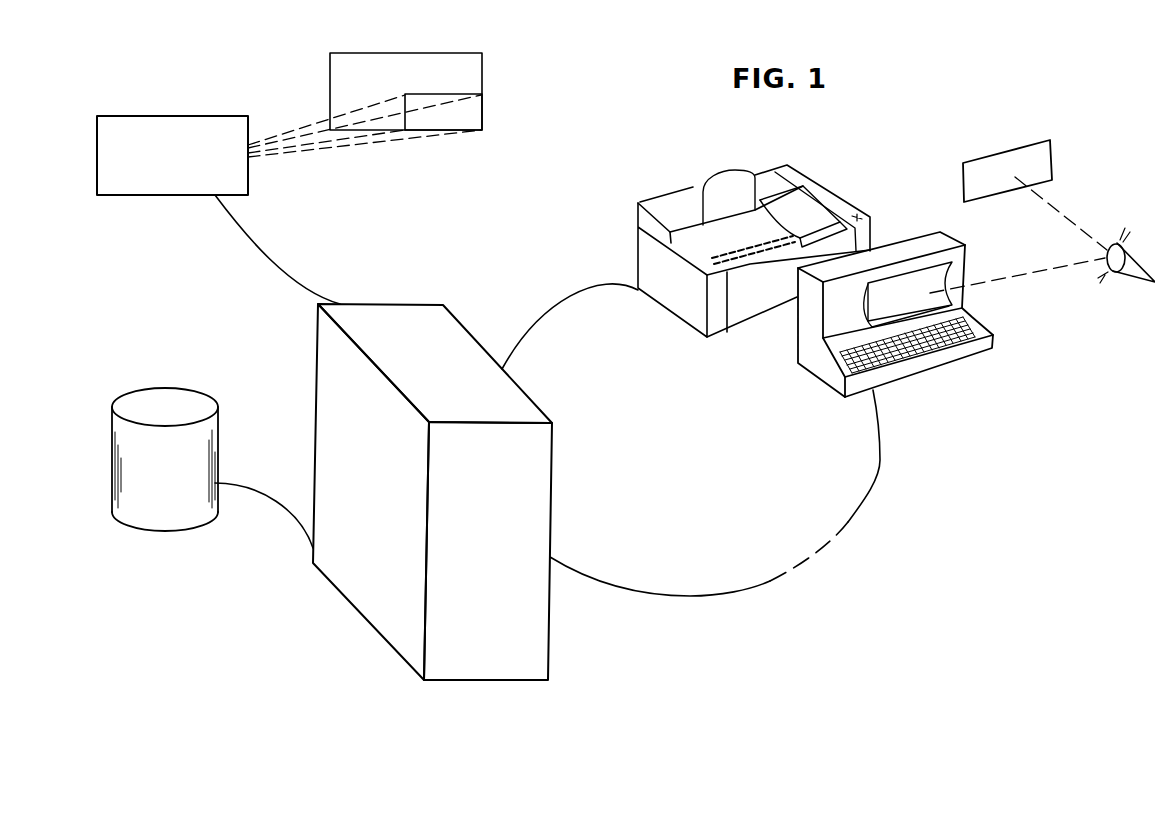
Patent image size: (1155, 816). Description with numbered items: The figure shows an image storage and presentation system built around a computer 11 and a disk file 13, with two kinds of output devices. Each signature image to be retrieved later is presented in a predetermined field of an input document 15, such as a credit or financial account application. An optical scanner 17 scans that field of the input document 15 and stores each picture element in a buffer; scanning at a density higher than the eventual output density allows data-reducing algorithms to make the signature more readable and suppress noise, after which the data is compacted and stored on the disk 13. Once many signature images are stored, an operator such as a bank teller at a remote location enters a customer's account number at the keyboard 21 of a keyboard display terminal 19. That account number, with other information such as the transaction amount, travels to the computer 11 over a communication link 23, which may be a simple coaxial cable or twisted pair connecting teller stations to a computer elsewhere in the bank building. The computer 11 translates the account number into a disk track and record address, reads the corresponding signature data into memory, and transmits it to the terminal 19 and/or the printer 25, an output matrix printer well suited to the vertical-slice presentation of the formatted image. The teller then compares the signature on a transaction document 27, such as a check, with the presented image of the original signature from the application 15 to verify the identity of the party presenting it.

The computer 11 is at (407, 302).
The disk file 13 is at (203, 392).
The input document 15 is at (483, 67).
The optical scanner 17 is at (195, 115).
The keyboard display terminal 19 is at (995, 347).
The keyboard 21 is at (942, 342).
The communication link 23 is at (546, 313).
The printer 25 is at (870, 217).
The transaction document 27 is at (1053, 150).